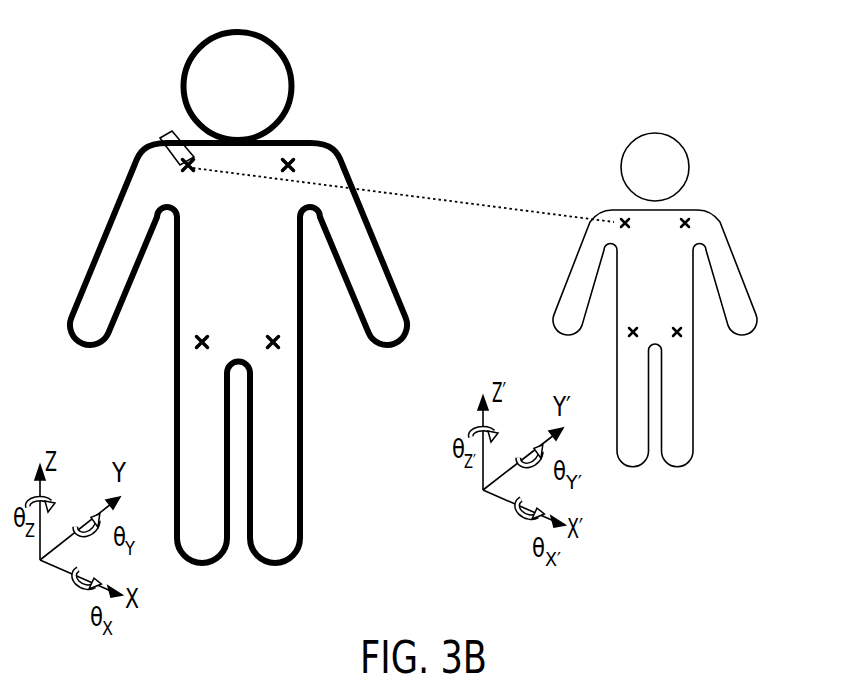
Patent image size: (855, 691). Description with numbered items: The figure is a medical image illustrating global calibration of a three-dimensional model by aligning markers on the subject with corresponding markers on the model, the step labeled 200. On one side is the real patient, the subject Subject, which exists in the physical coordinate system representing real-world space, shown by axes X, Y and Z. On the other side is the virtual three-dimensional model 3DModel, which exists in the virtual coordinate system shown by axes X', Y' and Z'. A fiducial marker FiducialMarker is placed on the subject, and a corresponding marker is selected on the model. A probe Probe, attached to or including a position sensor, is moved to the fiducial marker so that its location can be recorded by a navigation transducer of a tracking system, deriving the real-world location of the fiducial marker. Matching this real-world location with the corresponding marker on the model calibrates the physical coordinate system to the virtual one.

The calibrating the 3D model globally by aligning markers on the subject with corres 200 is at (470, 198).
The probe Probe is at (166, 139).
The fiducial marker FiducialMarker is at (291, 158).
The subject Subject is at (238, 327).
The 3D model 3DModel is at (655, 348).